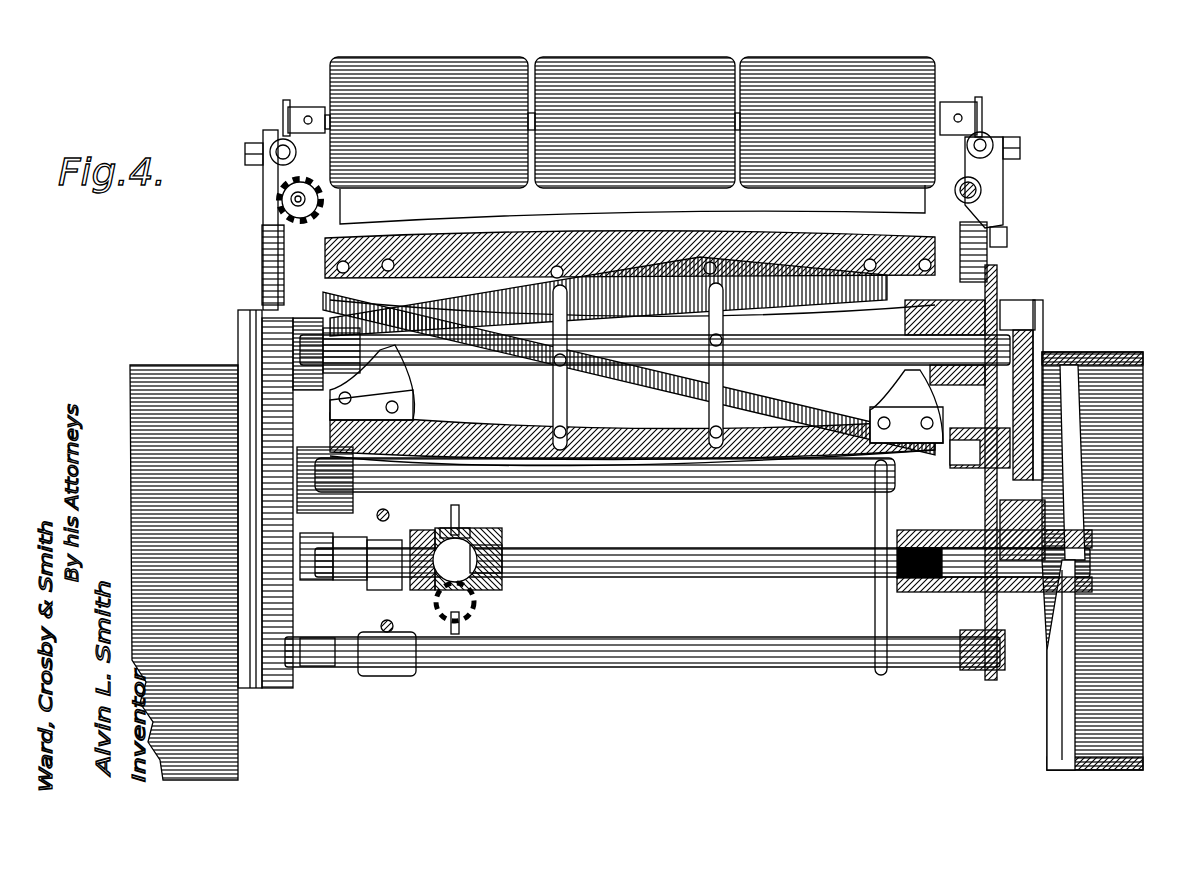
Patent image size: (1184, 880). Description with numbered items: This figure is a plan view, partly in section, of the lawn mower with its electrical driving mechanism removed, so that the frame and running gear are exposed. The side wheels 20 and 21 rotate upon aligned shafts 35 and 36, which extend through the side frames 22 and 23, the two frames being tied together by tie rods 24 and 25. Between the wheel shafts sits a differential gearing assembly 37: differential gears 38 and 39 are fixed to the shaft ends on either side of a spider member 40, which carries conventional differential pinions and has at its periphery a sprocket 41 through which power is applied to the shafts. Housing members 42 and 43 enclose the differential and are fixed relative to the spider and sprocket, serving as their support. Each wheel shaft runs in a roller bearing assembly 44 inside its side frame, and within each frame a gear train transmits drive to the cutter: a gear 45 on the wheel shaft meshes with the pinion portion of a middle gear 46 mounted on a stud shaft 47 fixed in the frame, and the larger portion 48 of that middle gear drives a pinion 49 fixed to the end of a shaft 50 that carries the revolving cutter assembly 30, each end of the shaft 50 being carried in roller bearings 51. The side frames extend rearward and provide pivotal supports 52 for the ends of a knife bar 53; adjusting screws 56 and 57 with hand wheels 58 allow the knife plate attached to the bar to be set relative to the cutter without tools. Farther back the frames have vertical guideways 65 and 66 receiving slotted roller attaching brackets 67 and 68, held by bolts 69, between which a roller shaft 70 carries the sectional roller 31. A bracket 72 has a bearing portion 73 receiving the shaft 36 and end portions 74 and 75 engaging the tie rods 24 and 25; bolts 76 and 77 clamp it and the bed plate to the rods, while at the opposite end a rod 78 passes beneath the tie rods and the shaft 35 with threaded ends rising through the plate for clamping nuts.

The side wheel 20 is at (1125, 355).
The side wheel 21 is at (160, 375).
The side frame member 22 is at (1015, 672).
The side frame member 23 is at (262, 330).
The tie rod 24 is at (625, 480).
The tie rod 25 is at (680, 658).
The revolving cutter assembly 30 is at (760, 410).
The roller 31 is at (630, 122).
The shaft 35 is at (660, 570).
The shaft 36 is at (355, 565).
The differential gearing assembly 37 is at (505, 540).
The differential gear 38 is at (502, 552).
The differential gear 39 is at (420, 545).
The spider member 40 is at (485, 528).
The sprocket 41 is at (470, 628).
The housing member 42 is at (505, 530).
The housing member 43 is at (450, 525).
The roller bearing assembly 44 is at (955, 595).
The gear 45 is at (1065, 510).
The middle gear 46 is at (1110, 435).
The stud shaft 47 is at (975, 470).
The larger gear portion 48 is at (1040, 363).
The pinion 49 is at (1010, 320).
The cutter shaft 50 is at (660, 345).
The roller bearing 51 is at (980, 365).
The pivotal support 52 is at (262, 245).
The knife bar 53 is at (780, 222).
The adjusting screw 56 is at (982, 190).
The adjusting screw 57 is at (291, 199).
The hand wheel 58 is at (282, 183).
The vertical guideway 65 is at (983, 140).
The vertical guideway 66 is at (272, 133).
The roller attaching bracket 67 is at (990, 143).
The roller attaching bracket 68 is at (278, 150).
The bolt 69 is at (244, 153).
The roller shaft 70 is at (330, 108).
The bracket 72 is at (415, 680).
The bearing portion 73 is at (380, 575).
The end portion 74 is at (355, 500).
The end portion 75 is at (365, 672).
The bolt 76 is at (377, 517).
The bolt 77 is at (387, 633).
The rod 78 is at (885, 675).